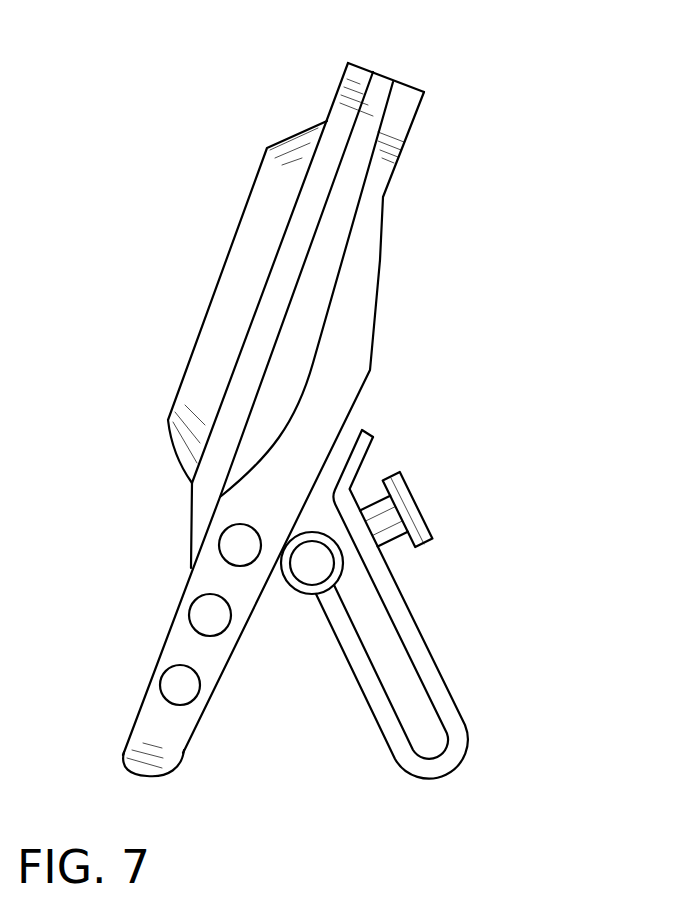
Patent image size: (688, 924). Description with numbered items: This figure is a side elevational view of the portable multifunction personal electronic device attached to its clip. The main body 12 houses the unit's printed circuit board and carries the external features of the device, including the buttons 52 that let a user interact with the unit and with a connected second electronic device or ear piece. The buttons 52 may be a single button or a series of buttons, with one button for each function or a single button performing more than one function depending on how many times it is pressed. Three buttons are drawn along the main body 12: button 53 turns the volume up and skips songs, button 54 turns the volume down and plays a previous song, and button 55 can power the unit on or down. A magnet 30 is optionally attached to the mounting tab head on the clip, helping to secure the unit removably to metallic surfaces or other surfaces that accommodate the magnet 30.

The main body 12 is at (387, 77).
The magnet 30 is at (408, 503).
The buttons 52 is at (242, 685).
The button for turning the volume up and skipping songs 53 is at (222, 548).
The button for turning the volume down and playing a previous song 54 is at (191, 611).
The power button 55 is at (162, 680).